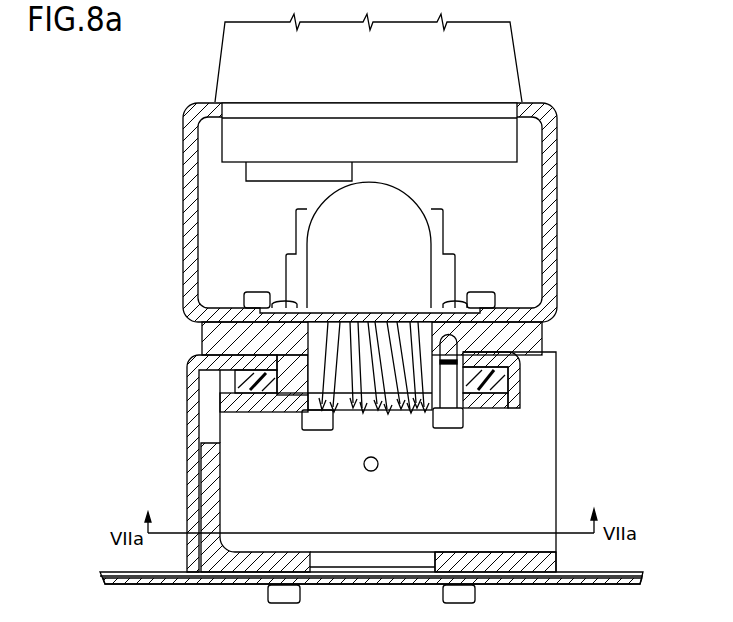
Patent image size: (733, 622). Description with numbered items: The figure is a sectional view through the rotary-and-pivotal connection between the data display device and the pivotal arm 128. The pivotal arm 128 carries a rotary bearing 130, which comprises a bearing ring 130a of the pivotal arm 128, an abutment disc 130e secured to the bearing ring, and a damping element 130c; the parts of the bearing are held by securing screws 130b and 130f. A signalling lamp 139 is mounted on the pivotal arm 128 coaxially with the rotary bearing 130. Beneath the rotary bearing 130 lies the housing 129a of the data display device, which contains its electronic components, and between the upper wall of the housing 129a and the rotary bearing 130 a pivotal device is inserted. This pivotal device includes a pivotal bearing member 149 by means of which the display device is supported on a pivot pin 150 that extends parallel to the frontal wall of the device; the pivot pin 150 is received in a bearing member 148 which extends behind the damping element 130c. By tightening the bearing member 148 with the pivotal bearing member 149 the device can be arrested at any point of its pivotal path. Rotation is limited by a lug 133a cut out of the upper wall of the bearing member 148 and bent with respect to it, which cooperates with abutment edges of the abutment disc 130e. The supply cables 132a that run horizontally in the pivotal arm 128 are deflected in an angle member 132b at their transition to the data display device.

The signalling lamp 139 is at (485, 72).
The pivotal arm 128 is at (520, 182).
The angle member 132b is at (390, 254).
The securing screw 130b is at (487, 300).
The bearing ring 130a is at (512, 335).
The rotary bearing 130 is at (542, 335).
The damping element 130c is at (517, 380).
The lug 133a is at (518, 393).
The abutment disc 130e is at (523, 412).
The securing screw 130f is at (450, 422).
The bearing member 148 is at (188, 388).
The supply cables 132a is at (223, 395).
The pivotal bearing member 149 is at (215, 483).
The housing 129a is at (580, 572).
The pivot pin 150 is at (364, 470).